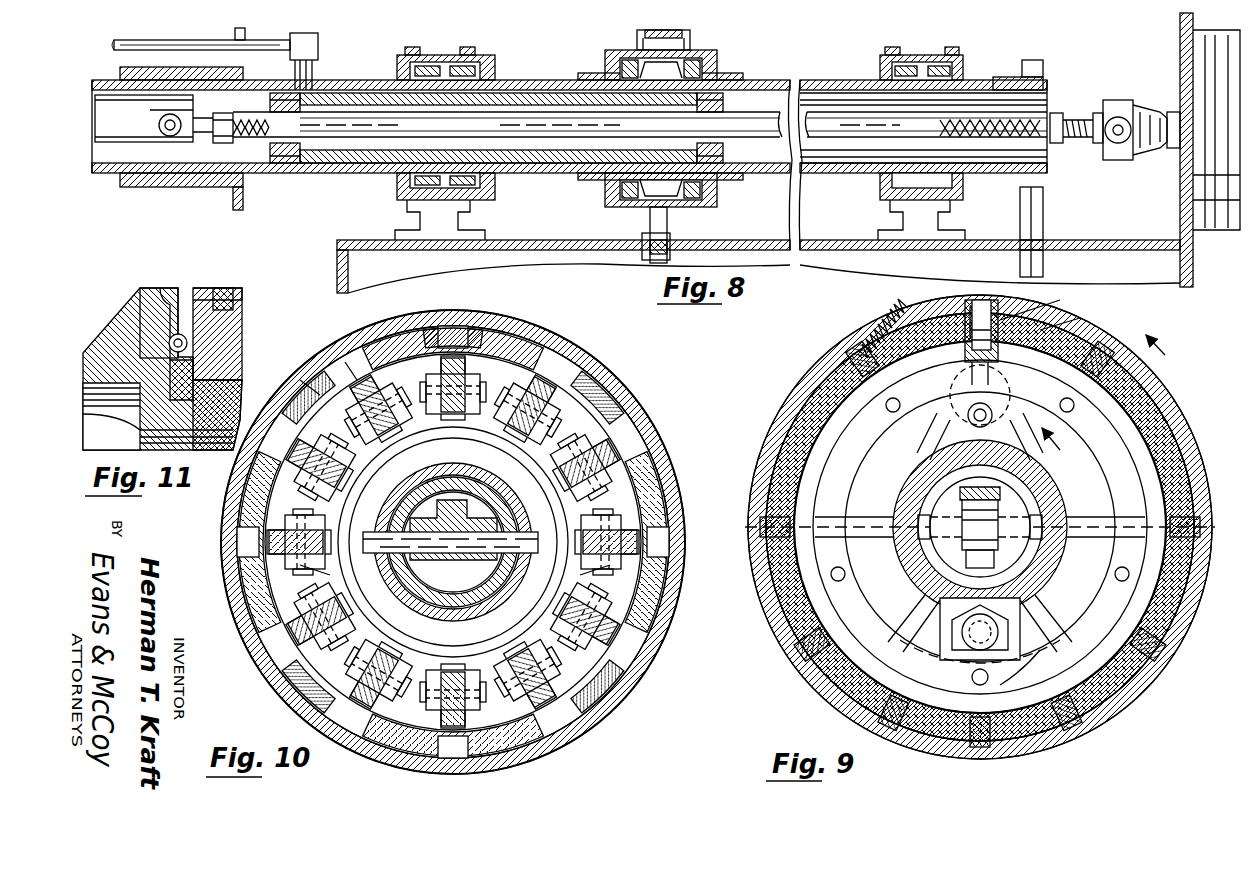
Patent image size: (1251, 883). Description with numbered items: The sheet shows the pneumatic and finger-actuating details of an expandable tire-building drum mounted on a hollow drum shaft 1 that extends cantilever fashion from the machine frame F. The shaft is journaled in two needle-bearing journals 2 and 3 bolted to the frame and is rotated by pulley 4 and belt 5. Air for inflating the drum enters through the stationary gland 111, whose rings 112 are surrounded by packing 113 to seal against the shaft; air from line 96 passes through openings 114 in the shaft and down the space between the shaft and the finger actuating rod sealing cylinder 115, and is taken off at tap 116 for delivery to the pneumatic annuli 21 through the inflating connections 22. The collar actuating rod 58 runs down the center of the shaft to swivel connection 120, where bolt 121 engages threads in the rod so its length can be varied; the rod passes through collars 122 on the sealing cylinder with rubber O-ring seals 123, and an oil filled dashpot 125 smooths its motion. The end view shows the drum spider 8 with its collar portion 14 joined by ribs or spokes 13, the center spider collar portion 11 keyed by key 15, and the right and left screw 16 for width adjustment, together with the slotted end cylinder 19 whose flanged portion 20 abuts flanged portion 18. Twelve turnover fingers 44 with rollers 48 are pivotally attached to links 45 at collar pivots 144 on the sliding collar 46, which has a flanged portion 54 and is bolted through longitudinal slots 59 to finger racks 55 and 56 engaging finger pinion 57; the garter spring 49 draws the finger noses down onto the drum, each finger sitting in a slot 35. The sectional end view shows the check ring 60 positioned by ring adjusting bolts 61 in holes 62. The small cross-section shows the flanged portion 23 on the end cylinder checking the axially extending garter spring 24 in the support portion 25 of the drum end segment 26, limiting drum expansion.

In FIG. 8, the drum shaft 1 is at (816, 80).
In FIG. 10, the drum shaft 1 is at (416, 500).
In FIG. 9, the drum shaft 1 is at (912, 492).
In FIG. 8, the needle-bearing journal 2 is at (440, 50).
In FIG. 8, the needle-bearing journal 3 is at (904, 50).
In FIG. 8, the pulley 4 is at (998, 76).
In FIG. 8, the belt 5 is at (1044, 222).
In FIG. 11, the drum spider 8 is at (225, 365).
In FIG. 9, the collar portion 11 is at (1120, 405).
In FIG. 9, the ribs or spokes 13 is at (1082, 527).
In FIG. 9, the collar portion 14 is at (912, 498).
In FIG. 9, the key 15 is at (950, 428).
In FIG. 9, the right and left screw 16 is at (988, 650).
In FIG. 11, the flanged portion 18 is at (205, 440).
In FIG. 11, the slotted end cylinder 19 is at (86, 352).
In FIG. 9, the slotted end cylinder 19 is at (812, 376).
In FIG. 11, the flanged portion 20 is at (145, 428).
In FIG. 9, the flanged portion 20 is at (1078, 658).
In FIG. 11, the pneumatic annulus 21 is at (243, 300).
In FIG. 8, the pneumatic inflating connection 22 is at (168, 40).
In FIG. 9, the pneumatic inflating connection 22 is at (992, 416).
In FIG. 11, the circumferentially flanged portion 23 is at (174, 288).
In FIG. 11, the garter spring 24 is at (187, 343).
In FIG. 11, the support portion 25 is at (200, 372).
In FIG. 11, the drum end segment 26 is at (222, 288).
In FIG. 10, the slot 35 is at (525, 338).
In FIG. 9, the finger 44 is at (842, 345).
In FIG. 10, the link 45 is at (474, 390).
In FIG. 9, the link 45 is at (776, 414).
In FIG. 8, the sliding collar 46 is at (158, 188).
In FIG. 10, the sliding collar 46 is at (524, 480).
In FIG. 9, the roller 48 is at (1000, 302).
In FIG. 9, the garter spring 49 is at (858, 345).
In FIG. 10, the flanged portion 54 is at (640, 500).
In FIG. 9, the finger rack 55 is at (1000, 560).
In FIG. 8, the finger rack 56 is at (105, 100).
In FIG. 10, the finger rack 56 is at (456, 500).
In FIG. 9, the finger rack 56 is at (958, 490).
In FIG. 9, the finger pinion 57 is at (960, 540).
In FIG. 8, the rod 58 is at (362, 124).
In FIG. 9, the longitudinal slot 59 is at (922, 530).
In FIG. 10, the check ring 60 is at (645, 470).
In FIG. 10, the ring adjusting bolt 61 is at (612, 398).
In FIG. 10, the hole 62 is at (300, 382).
In FIG. 8, the air line 96 is at (655, 262).
In FIG. 8, the gland 111 is at (705, 74).
In FIG. 8, the ring 112 is at (606, 190).
In FIG. 8, the packing 113 is at (680, 206).
In FIG. 8, the opening 114 is at (640, 56).
In FIG. 8, the finger actuating rod sealing cylinder 115 is at (540, 93).
In FIG. 8, the tap 116 is at (312, 68).
In FIG. 8, the swivel connection 120 is at (1132, 102).
In FIG. 8, the bolt 121 is at (1076, 120).
In FIG. 8, the collar 122 is at (278, 150).
In FIG. 8, the O-ring seal 123 is at (282, 165).
In FIG. 8, the dashpot 125 is at (1212, 172).
In FIG. 10, the collar pivot 144 is at (312, 570).
In FIG. 8, the machine frame F is at (337, 250).